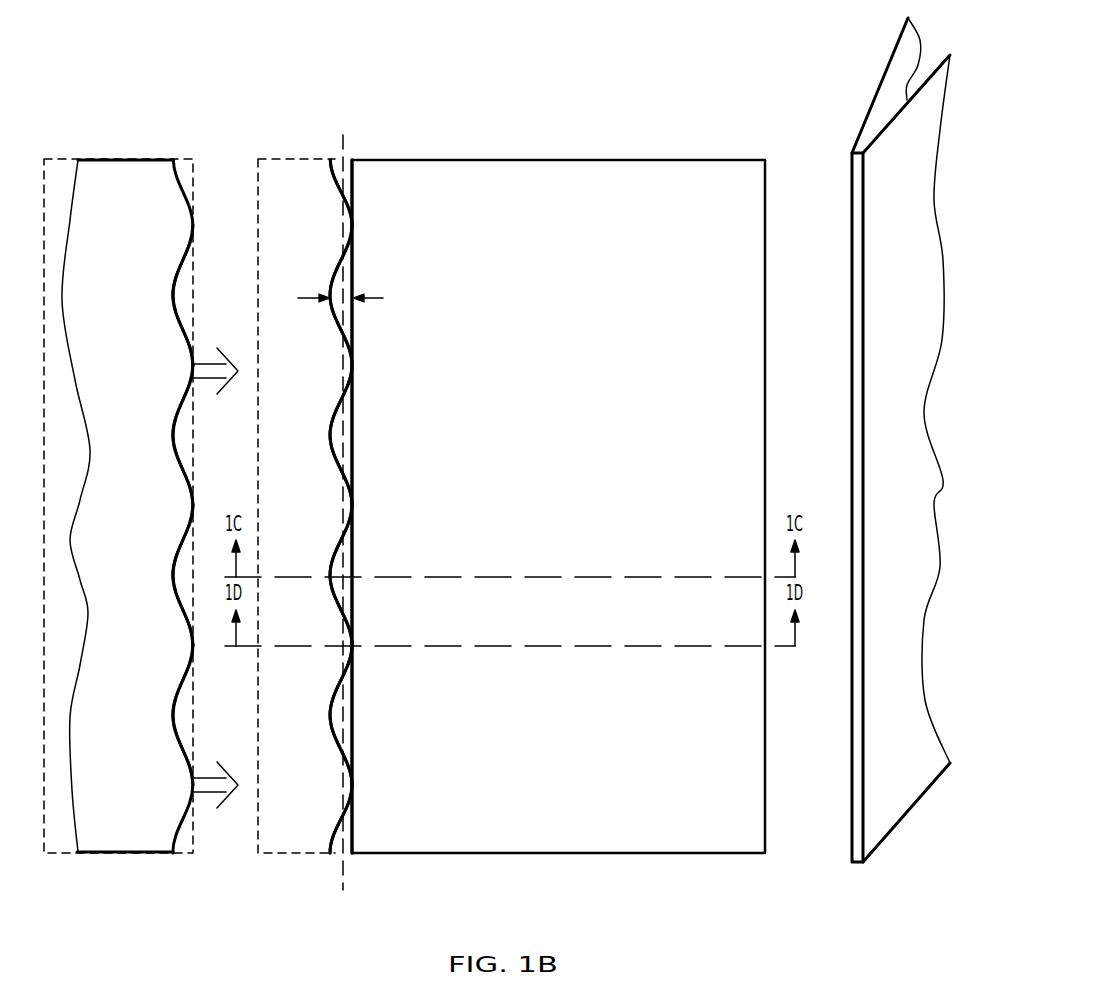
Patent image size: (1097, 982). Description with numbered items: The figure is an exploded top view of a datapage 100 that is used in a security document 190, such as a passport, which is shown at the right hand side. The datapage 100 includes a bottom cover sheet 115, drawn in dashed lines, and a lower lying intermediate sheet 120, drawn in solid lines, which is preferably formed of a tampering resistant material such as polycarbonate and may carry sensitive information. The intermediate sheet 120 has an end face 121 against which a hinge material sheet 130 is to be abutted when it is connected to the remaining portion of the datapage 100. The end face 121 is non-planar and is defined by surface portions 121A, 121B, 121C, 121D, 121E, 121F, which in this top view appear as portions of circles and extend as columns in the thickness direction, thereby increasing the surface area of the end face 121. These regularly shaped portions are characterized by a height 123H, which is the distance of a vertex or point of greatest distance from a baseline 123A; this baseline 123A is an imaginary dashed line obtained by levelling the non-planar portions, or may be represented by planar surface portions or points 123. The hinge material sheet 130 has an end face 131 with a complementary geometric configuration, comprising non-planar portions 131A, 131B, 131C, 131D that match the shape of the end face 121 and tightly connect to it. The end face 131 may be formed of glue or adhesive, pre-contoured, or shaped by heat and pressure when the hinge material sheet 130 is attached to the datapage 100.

The datapage 100 is at (558, 455).
The bottom cover sheet 115 is at (265, 158).
The intermediate sheet 120 is at (567, 188).
The end face 121 is at (338, 231).
The non-planar surface portion 121A is at (330, 165).
The non-planar surface portion 121B is at (330, 300).
The non-planar surface portion 121C is at (330, 437).
The non-planar surface portion 121D is at (330, 577).
The non-planar surface portion 121E is at (330, 715).
The sixth side portion 121F is at (330, 845).
The planar surface portions 123 is at (354, 220).
The baseline 123A is at (345, 185).
The height 123H is at (357, 278).
The hinge material sheet 130 is at (136, 148).
The end face 131 is at (199, 225).
The non-planar portion 131A is at (173, 297).
The non-planar portion 131B is at (173, 437).
The non-planar portion 131C is at (173, 577).
The non-planar portion 131D is at (173, 715).
The security document 190 is at (848, 116).